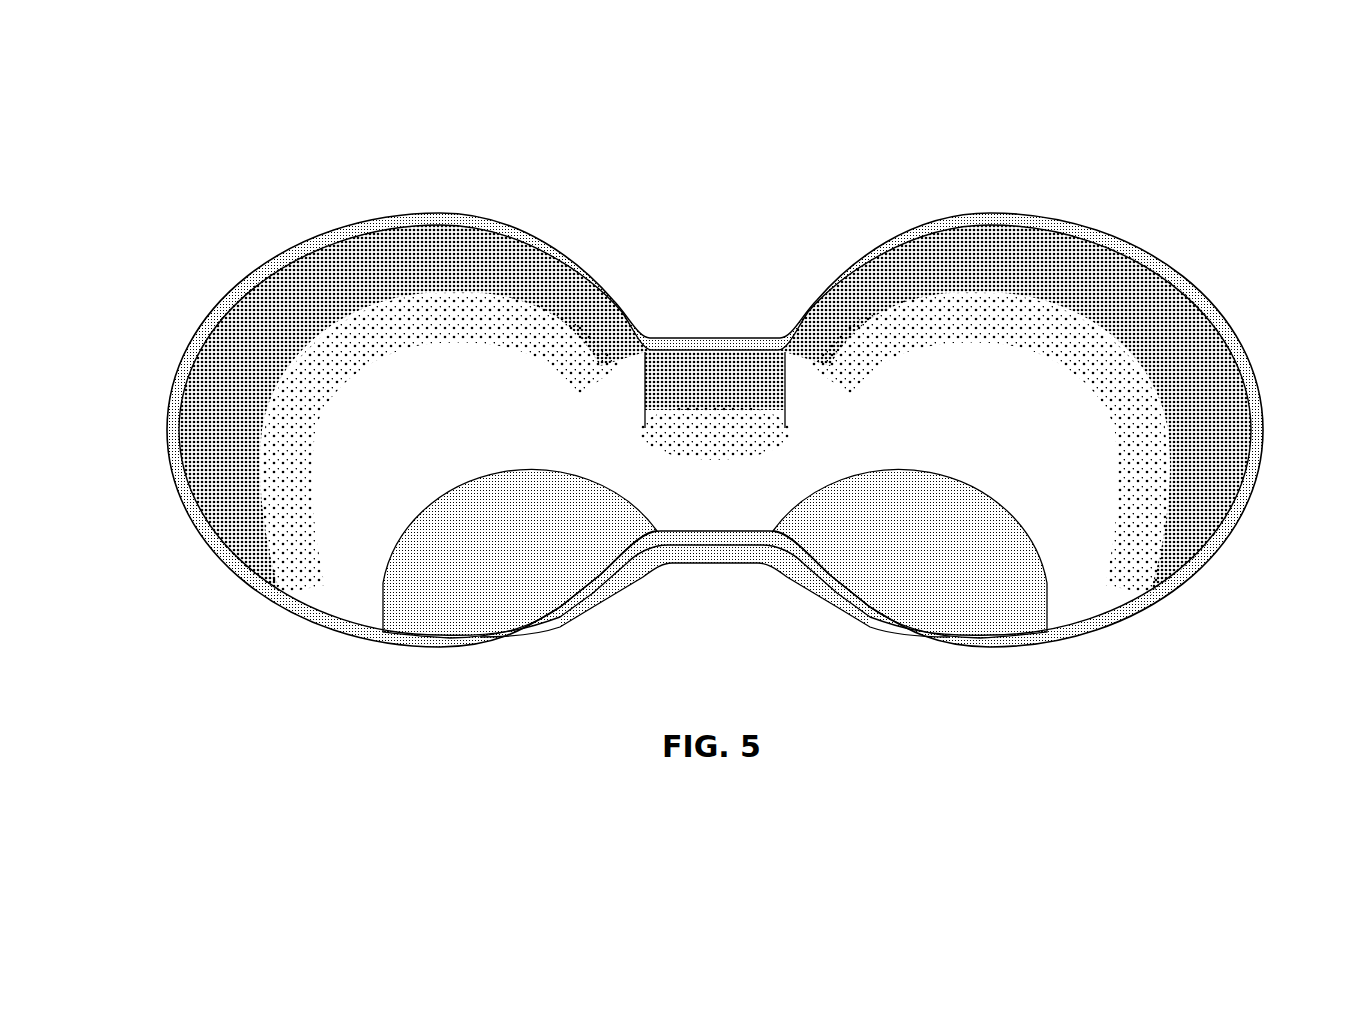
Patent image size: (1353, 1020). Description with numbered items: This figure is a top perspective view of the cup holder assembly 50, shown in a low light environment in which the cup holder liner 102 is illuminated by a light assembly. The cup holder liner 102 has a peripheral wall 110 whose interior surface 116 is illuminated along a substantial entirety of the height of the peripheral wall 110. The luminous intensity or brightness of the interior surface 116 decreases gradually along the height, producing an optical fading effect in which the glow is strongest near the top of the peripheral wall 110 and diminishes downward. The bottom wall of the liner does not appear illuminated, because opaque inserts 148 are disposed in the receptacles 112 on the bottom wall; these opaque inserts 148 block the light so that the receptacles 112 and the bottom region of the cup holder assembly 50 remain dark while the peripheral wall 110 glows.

The cup holder assembly 50 is at (712, 414).
The cup holder liner 102 is at (984, 250).
The peripheral wall 110 is at (845, 297).
The receptacles 112 is at (262, 385).
The interior surface 116 is at (1005, 320).
The opaque inserts 148 is at (480, 582).